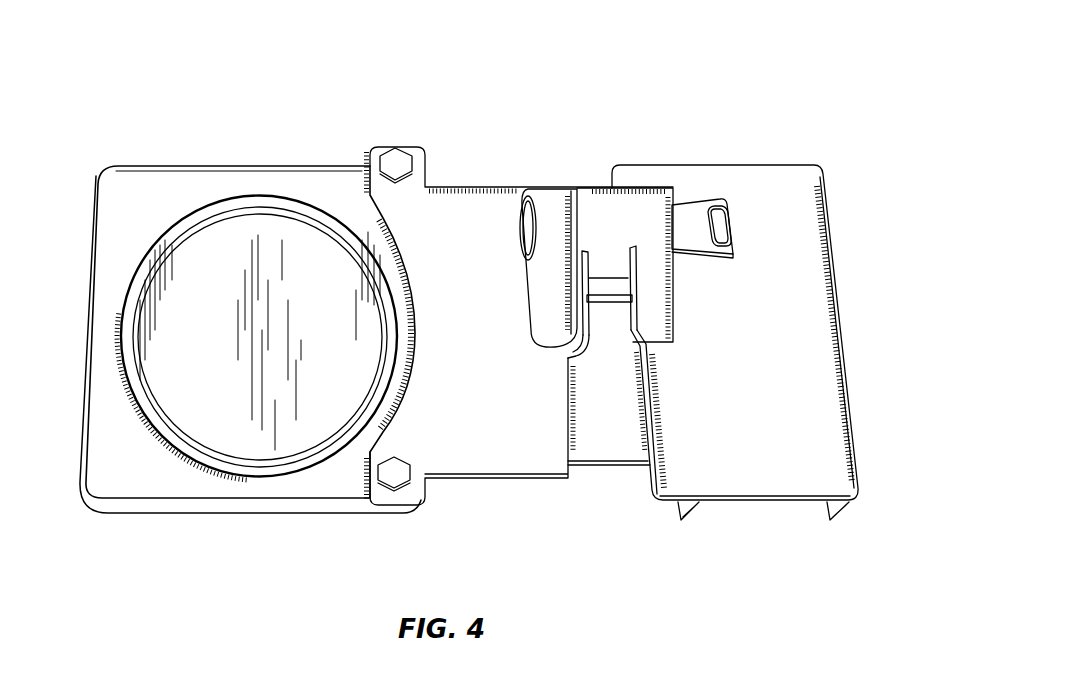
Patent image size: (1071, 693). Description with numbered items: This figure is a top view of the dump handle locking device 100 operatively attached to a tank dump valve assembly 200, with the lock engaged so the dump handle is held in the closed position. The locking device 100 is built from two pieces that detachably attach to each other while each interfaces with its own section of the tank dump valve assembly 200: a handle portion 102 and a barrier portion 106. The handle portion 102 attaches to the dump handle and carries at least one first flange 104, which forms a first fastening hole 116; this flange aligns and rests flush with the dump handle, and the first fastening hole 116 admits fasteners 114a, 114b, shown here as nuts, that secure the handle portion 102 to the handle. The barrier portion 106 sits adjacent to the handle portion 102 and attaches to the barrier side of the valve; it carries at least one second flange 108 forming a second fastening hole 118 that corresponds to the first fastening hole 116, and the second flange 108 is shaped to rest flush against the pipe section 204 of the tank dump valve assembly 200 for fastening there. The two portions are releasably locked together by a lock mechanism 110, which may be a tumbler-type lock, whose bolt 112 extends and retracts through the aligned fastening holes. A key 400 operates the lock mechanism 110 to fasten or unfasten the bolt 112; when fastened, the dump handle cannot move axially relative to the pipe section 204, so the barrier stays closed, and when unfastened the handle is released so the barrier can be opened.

The dump handle locking device 100 is at (805, 88).
The tank dump valve assembly 200 is at (140, 54).
The pipe section 204 is at (193, 220).
The barrier portion 106 is at (455, 208).
The fastener 114a is at (396, 152).
The fastener 114b is at (397, 458).
The lock mechanism 110 is at (588, 175).
The first flange 104 is at (640, 305).
The first fastening hole 116 is at (624, 312).
The second fastening hole 118 is at (596, 312).
The second flange 108 is at (578, 337).
The bolt 112 is at (604, 300).
The key 400 is at (693, 212).
The handle portion 102 is at (823, 427).